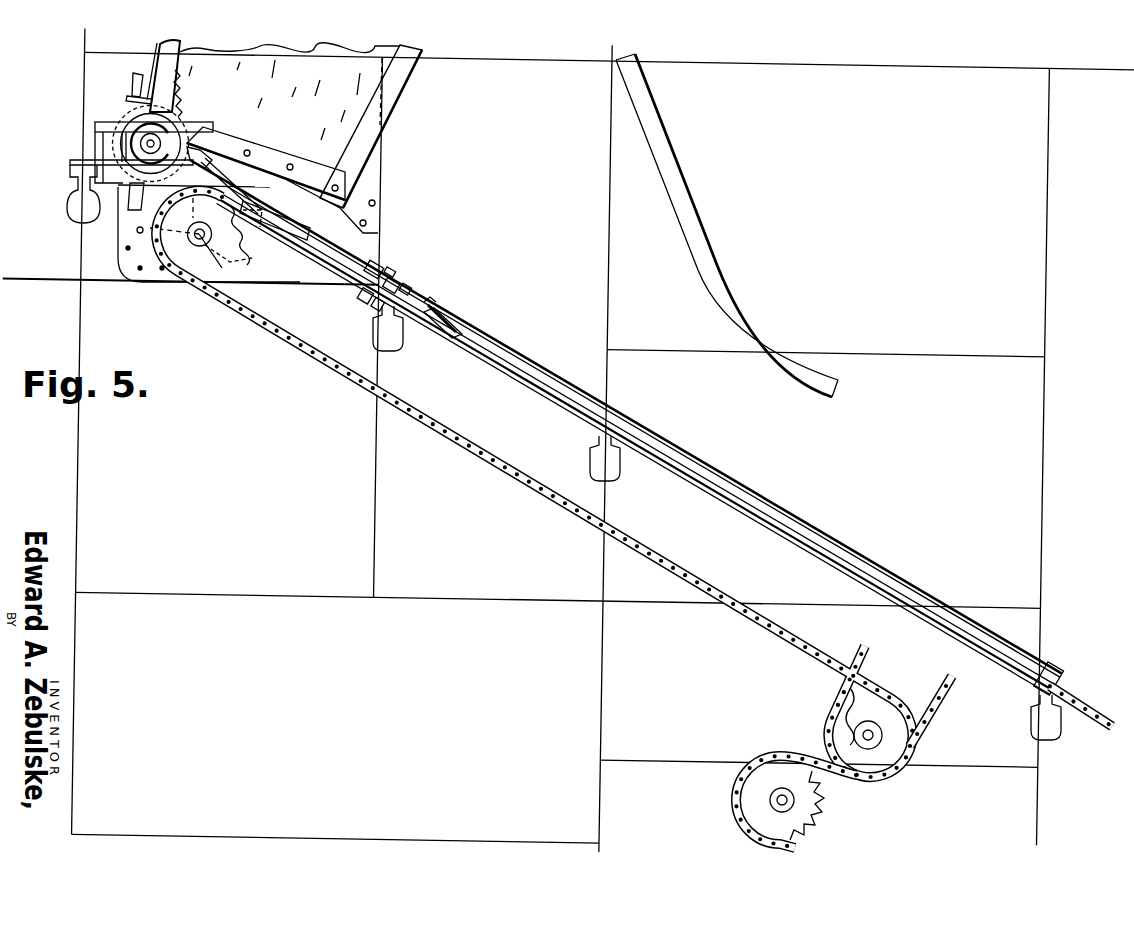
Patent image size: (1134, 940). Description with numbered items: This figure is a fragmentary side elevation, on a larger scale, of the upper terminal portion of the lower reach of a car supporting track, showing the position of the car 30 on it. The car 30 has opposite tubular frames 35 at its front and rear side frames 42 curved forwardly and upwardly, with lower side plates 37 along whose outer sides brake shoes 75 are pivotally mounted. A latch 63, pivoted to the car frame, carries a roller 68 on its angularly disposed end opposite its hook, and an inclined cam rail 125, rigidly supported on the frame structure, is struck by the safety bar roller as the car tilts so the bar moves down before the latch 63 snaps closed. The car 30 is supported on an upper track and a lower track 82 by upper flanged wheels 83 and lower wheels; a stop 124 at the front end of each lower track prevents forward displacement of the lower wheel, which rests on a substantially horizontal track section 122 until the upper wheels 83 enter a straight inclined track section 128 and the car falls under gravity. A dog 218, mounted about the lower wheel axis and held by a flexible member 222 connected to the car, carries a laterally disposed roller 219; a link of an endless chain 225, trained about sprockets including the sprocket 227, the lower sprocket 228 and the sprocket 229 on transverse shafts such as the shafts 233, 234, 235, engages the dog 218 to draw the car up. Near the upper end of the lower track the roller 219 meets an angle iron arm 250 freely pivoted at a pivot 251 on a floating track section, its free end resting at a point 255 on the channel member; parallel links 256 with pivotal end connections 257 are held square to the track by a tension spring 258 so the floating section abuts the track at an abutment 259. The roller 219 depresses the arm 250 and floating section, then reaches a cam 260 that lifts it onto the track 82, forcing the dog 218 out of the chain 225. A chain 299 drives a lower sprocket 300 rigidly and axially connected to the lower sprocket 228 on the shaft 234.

The car 30 is at (405, 83).
The tubular frames 35 is at (158, 50).
The lower side plates 37 is at (143, 275).
The rear side frames 42 is at (385, 100).
The latch 63 is at (144, 69).
The roller 68 is at (133, 98).
The brake shoes 75 is at (287, 167).
The lower track 82 is at (556, 376).
The upper flanged wheels 83 is at (138, 140).
The horizontal track section 122 is at (103, 157).
The stop 124 is at (120, 133).
The inclined cam rail 125 is at (715, 280).
The inclined track section 128 is at (677, 450).
The dog 218 is at (200, 157).
The roller 219 is at (203, 130).
The flexible member 222 is at (178, 103).
The endless chain 225 is at (500, 473).
The sprocket 227 is at (192, 257).
The lower sprocket 228 is at (887, 755).
The sprocket 229 is at (807, 819).
The transverse shaft 233 is at (215, 250).
The transverse shaft 234 is at (870, 745).
The transverse shaft 235 is at (779, 800).
The angle iron arm 250 is at (452, 317).
The pivot 251 is at (432, 305).
The resting point 255 is at (455, 335).
The parallel links 256 is at (373, 310).
The pivotal end connections 257 is at (367, 295).
The tension spring 258 is at (397, 282).
The abutment 259 is at (393, 277).
The cam 260 is at (262, 222).
The chain 299 is at (933, 714).
The lower sprocket 300 is at (838, 714).